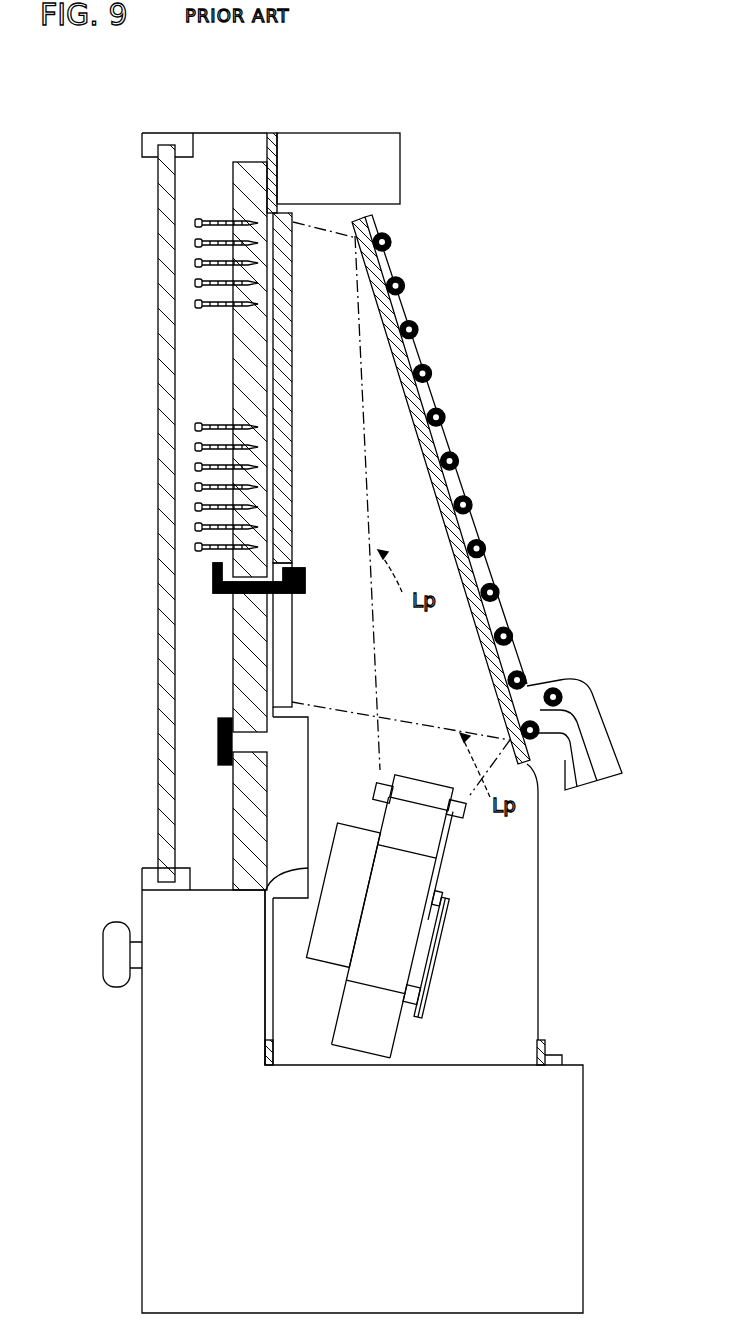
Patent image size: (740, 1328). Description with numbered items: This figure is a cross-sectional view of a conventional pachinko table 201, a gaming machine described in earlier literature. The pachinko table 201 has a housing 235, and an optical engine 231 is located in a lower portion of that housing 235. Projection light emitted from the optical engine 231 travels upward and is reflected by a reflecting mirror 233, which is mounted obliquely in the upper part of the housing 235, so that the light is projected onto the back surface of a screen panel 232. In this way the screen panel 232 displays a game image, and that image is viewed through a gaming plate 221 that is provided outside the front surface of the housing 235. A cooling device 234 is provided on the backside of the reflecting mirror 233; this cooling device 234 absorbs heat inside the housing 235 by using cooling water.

The pachinko table 201 is at (376, 100).
The gaming plate 221 is at (248, 160).
The optical engine 231 is at (437, 962).
The screen panel 232 is at (293, 380).
The reflecting mirror 233 is at (400, 303).
The cooling device 234 is at (626, 689).
The housing 235 is at (265, 892).